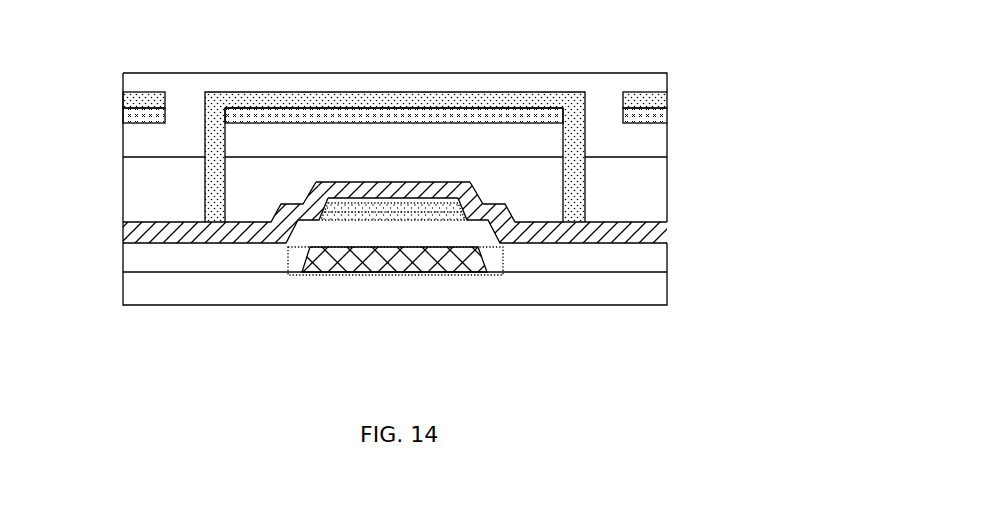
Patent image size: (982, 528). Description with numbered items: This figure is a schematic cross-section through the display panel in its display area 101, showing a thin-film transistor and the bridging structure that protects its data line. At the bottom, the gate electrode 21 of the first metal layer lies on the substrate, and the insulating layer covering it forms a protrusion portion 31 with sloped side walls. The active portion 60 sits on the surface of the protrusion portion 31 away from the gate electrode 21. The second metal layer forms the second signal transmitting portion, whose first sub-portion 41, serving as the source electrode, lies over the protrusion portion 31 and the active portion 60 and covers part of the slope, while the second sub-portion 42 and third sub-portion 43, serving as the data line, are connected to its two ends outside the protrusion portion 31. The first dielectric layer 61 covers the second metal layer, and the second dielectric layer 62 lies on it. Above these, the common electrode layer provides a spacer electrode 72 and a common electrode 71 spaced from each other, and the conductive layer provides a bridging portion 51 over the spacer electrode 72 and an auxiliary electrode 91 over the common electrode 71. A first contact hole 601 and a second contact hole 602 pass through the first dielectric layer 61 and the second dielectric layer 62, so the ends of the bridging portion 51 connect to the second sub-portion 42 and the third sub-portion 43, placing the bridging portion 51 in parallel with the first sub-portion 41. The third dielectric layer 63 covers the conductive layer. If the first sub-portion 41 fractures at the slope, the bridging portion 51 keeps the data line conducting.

The display area 101 is at (626, 45).
The third dielectric layer 63 is at (652, 84).
The second dielectric layer 62 is at (647, 147).
The first dielectric layer 61 is at (650, 200).
The auxiliary electrode 91 is at (149, 104).
The common electrode 71 is at (667, 114).
The bridging portion 51 is at (377, 103).
The spacer electrode 72 is at (263, 110).
The first contact hole 601 is at (205, 184).
The second contact hole 602 is at (585, 179).
The first sub-portion 41 is at (294, 197).
The second sub-portion 42 is at (148, 233).
The third sub-portion 43 is at (667, 231).
The active portion 60 is at (373, 208).
The protrusion portion 31 is at (298, 249).
The gate electrode 21 is at (441, 258).